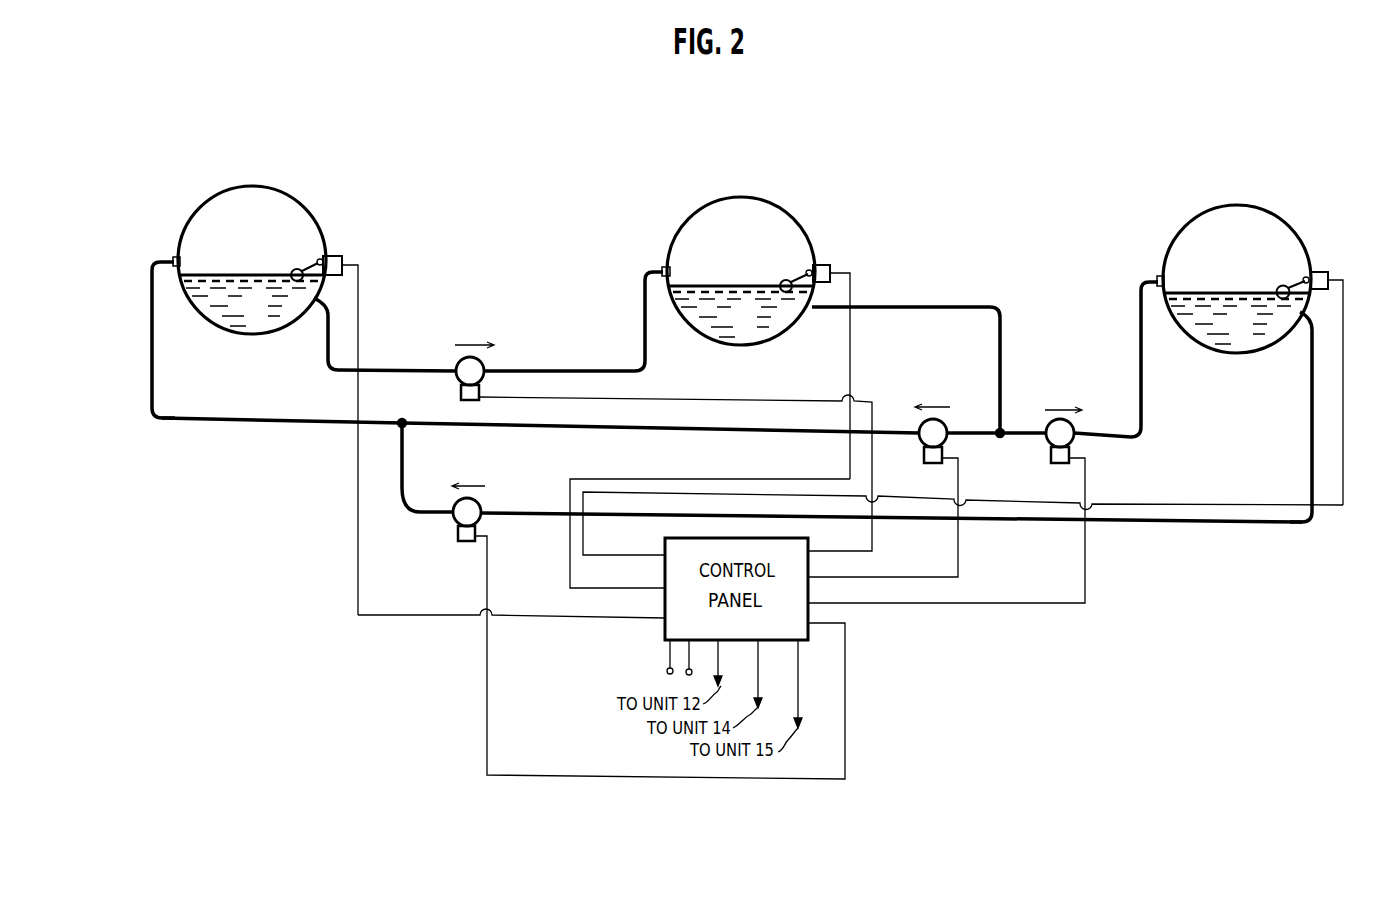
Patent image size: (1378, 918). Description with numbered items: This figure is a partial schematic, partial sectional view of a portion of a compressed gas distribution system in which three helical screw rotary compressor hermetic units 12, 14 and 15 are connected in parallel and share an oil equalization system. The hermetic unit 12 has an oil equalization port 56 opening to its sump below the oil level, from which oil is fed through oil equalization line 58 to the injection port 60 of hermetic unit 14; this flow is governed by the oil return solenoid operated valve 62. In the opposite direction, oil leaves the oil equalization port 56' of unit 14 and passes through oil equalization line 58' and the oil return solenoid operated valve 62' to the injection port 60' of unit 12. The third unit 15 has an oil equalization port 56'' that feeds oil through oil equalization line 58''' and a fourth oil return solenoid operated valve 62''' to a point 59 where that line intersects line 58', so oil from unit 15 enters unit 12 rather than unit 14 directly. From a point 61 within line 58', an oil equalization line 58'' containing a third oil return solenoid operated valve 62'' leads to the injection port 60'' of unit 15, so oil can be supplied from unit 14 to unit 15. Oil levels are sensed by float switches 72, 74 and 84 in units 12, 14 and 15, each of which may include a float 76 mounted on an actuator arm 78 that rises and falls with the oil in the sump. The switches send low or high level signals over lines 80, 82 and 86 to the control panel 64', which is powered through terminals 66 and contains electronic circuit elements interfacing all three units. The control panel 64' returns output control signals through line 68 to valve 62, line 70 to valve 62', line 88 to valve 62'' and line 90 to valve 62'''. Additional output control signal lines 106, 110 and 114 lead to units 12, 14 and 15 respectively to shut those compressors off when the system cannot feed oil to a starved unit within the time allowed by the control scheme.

The compressor hermetic unit 12 is at (298, 202).
The compressor hermetic unit 14 is at (795, 212).
The compressor hermetic unit 15 is at (1264, 212).
The oil equalization port 56 is at (385, 332).
The oil equalization port 56' is at (905, 370).
The oil equalization port 56'' is at (1320, 417).
The oil equalization line 58 is at (573, 321).
The oil equalization line 58' is at (540, 413).
The oil equalization line 58'' is at (1146, 359).
The oil equalization line 58''' is at (891, 537).
The point 59 is at (400, 422).
The injection port 60 is at (645, 256).
The injection port 60' is at (155, 325).
The injection port 60'' is at (1144, 263).
The point 61 is at (1002, 432).
The oil return solenoid operated valve 62 is at (493, 369).
The oil return solenoid operated valve 62' is at (955, 432).
The oil return solenoid operated valve 62'' is at (1083, 433).
The oil return solenoid operated valve 62''' is at (495, 510).
The control panel 64' is at (643, 653).
The terminals 66 is at (684, 674).
The line 68 is at (848, 553).
The line 70 is at (934, 577).
The float switch 72 is at (342, 256).
The float switch 74 is at (830, 264).
The float 76 is at (292, 269).
The actuator arm 78 is at (309, 263).
The line 80 is at (624, 621).
The line 82 is at (626, 588).
The float switch 84 is at (1320, 272).
The line 86 is at (646, 554).
The line 88 is at (1068, 603).
The line 90 is at (845, 669).
The output control signal line 106 is at (718, 669).
The output control signal line 110 is at (758, 694).
The output control signal line 114 is at (796, 704).